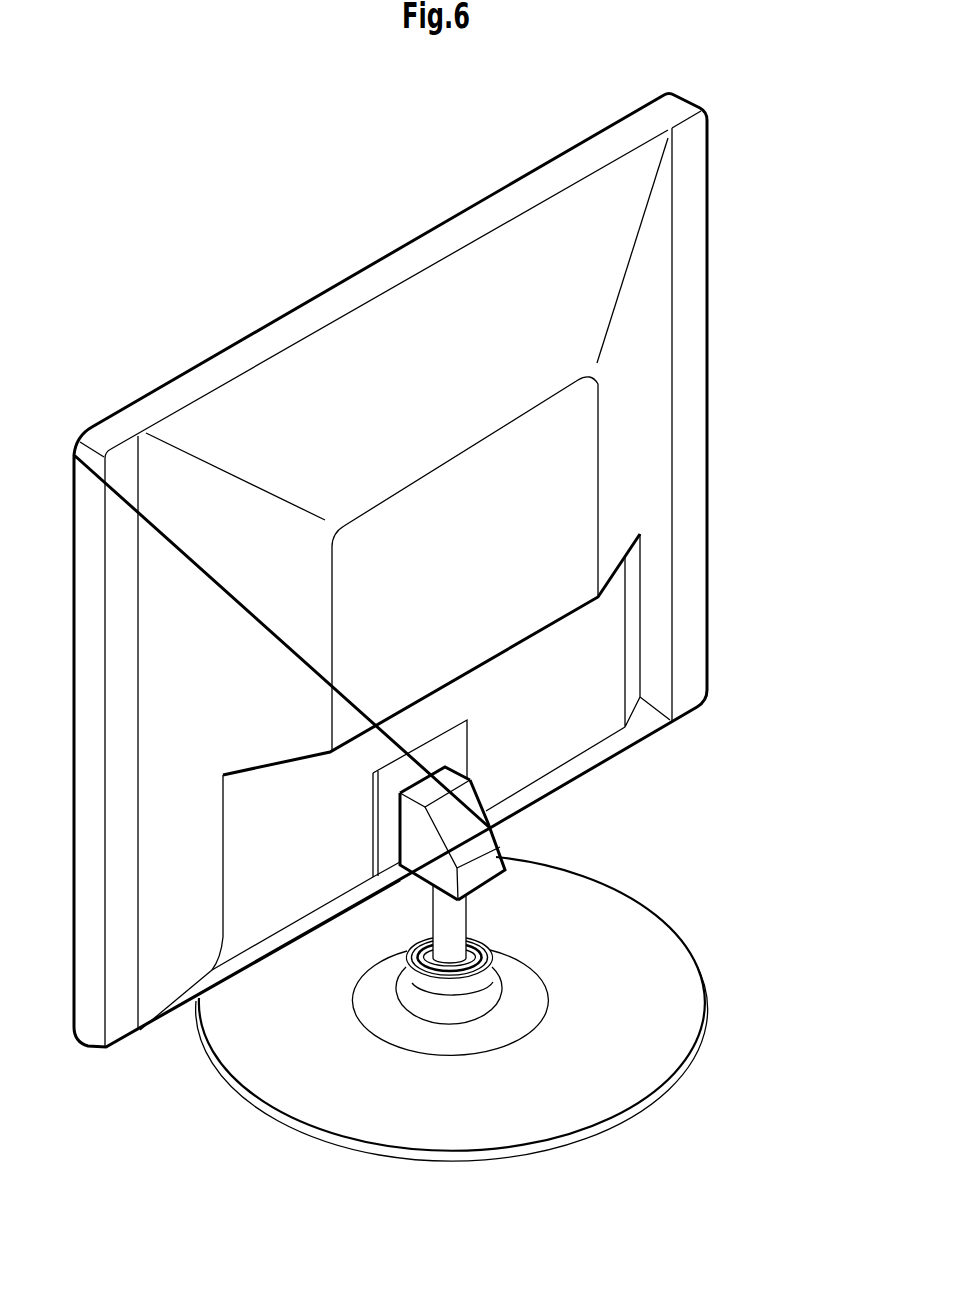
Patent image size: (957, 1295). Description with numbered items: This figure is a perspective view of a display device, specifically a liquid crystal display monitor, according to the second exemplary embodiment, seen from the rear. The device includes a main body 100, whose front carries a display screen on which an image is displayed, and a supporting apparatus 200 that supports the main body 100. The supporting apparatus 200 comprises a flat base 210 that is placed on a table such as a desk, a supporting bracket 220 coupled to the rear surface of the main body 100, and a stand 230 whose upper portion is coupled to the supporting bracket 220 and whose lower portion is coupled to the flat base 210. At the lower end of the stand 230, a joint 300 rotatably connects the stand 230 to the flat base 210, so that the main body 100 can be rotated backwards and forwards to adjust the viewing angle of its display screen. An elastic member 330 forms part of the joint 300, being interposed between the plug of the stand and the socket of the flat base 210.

The main body 100 is at (650, 417).
The supporting apparatus 200 is at (665, 908).
The flat base 210 is at (653, 983).
The supporting bracket 220 is at (473, 827).
The stand 230 is at (463, 907).
The joint 300 is at (405, 942).
The elastic member 330 is at (492, 948).